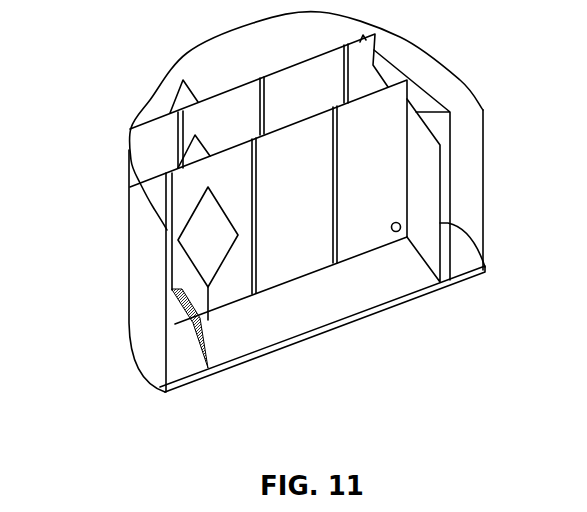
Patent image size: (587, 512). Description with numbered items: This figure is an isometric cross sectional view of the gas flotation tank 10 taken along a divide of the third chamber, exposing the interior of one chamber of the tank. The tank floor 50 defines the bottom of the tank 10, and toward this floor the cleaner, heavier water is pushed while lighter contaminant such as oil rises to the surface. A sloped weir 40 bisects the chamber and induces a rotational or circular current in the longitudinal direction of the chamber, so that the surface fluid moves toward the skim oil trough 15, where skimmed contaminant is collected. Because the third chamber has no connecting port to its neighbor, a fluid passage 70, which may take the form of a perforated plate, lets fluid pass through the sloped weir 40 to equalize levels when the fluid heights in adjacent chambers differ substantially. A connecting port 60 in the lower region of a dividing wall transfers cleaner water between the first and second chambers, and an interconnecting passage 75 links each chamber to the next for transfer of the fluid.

The gas flotation tank 10 is at (283, 222).
The skim oil trough 15 is at (427, 102).
The sloped weir 40 is at (217, 255).
The tank floor 50 is at (325, 313).
The connecting port 60 is at (397, 233).
The fluid passage 70 is at (207, 313).
The interconnecting passage 75 is at (180, 360).